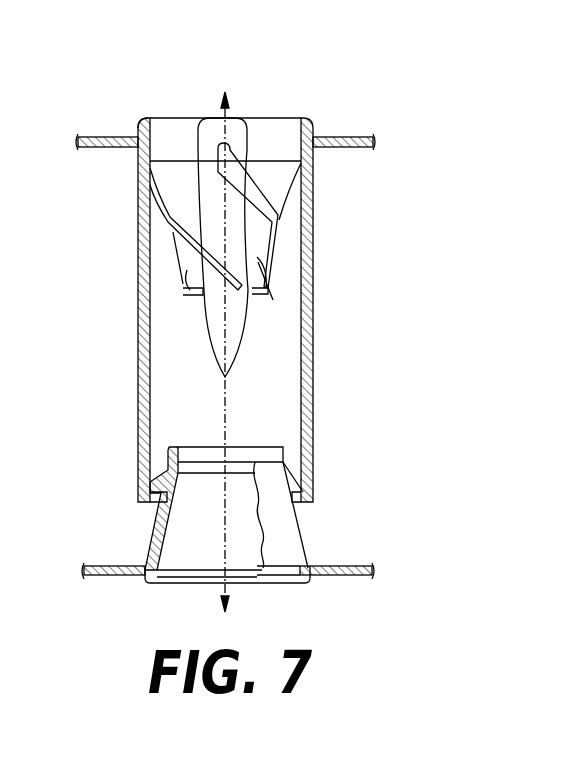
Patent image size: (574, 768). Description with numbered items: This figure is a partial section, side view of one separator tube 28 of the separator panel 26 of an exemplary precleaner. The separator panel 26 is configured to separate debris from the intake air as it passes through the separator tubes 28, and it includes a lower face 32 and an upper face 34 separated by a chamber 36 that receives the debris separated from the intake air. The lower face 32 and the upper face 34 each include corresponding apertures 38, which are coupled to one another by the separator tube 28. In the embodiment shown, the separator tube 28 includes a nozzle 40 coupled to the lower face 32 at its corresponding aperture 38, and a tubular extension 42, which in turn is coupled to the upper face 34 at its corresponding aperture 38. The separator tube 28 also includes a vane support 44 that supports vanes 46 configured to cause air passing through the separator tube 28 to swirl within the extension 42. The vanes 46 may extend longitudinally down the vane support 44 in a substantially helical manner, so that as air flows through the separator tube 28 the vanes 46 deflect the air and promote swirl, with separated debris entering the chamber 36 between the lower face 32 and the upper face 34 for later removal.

The separator panel 26 is at (398, 64).
The separator tube 28 is at (100, 338).
The lower face 32 is at (104, 576).
The upper face 34 is at (343, 138).
The chamber 36 is at (367, 315).
The aperture 38 is at (145, 118).
The nozzle 40 is at (282, 536).
The tubular extension 42 is at (313, 218).
The vane support 44 is at (245, 330).
The vane 46 is at (186, 294).